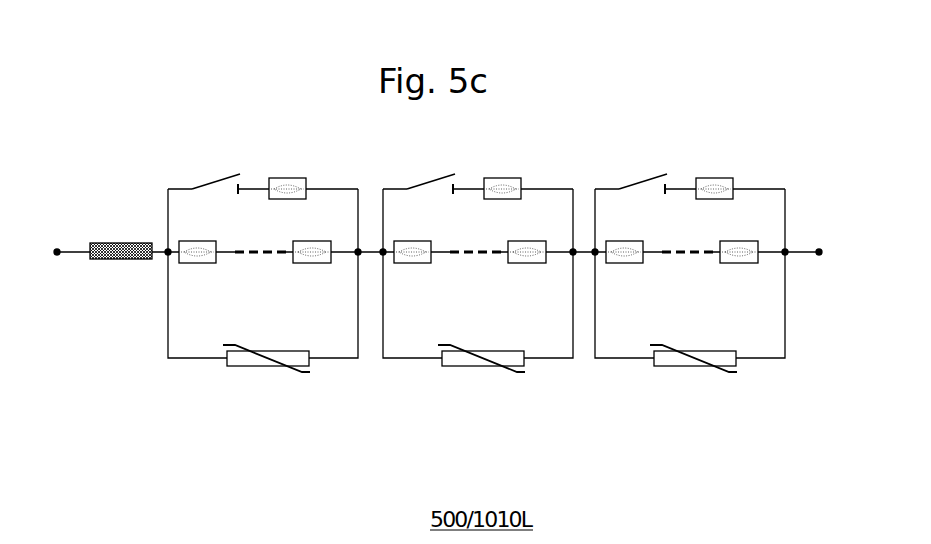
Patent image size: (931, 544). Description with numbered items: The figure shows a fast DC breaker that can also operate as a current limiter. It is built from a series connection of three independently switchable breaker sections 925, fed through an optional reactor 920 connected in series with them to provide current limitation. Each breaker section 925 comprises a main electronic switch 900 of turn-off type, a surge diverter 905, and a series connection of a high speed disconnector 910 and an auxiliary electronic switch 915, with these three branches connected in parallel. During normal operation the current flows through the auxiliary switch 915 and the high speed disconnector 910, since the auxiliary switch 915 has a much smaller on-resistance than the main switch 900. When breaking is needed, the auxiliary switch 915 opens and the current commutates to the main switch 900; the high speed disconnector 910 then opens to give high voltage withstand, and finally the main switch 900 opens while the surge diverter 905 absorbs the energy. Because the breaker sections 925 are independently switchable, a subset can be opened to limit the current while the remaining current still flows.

The main electronic switch 900 is at (184, 262).
The surge diverter 905 is at (480, 382).
The high speed disconnector 910 is at (415, 166).
The auxiliary electronic switch 915 is at (526, 169).
The reactor 920 is at (102, 263).
The breaker section 925 is at (195, 407).